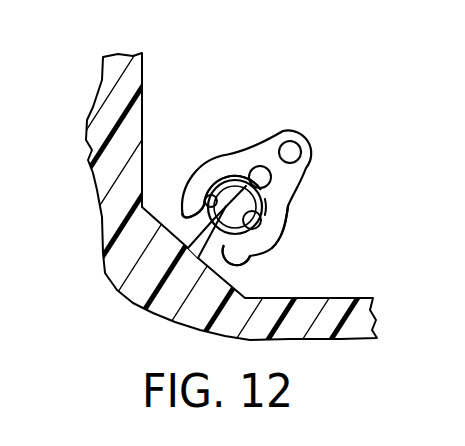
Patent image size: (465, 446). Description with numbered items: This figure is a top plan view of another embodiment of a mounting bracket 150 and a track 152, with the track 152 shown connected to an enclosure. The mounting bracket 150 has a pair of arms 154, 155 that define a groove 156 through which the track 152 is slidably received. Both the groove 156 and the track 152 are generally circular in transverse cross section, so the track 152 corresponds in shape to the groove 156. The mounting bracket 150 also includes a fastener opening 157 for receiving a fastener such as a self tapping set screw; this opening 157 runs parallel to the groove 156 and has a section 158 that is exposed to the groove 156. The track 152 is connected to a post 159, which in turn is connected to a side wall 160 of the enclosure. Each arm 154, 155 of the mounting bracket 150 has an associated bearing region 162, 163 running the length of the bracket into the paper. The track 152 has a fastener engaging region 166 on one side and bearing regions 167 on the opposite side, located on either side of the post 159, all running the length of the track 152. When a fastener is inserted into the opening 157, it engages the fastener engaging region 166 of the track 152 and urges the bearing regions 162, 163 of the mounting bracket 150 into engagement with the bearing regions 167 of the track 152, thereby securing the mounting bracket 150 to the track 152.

The mounting bracket 150 is at (277, 139).
The track 152 is at (272, 243).
The arm 154 is at (205, 170).
The arm 155 is at (265, 228).
The groove 156 is at (252, 160).
The fastener opening 157 is at (282, 178).
The section 158 is at (262, 168).
The post 159 is at (142, 296).
The side wall 160 is at (113, 264).
The bearing region 162 is at (203, 202).
The bearing region 163 is at (260, 215).
The fastener engaging region 166 is at (270, 197).
The bearing regions 167 is at (200, 208).